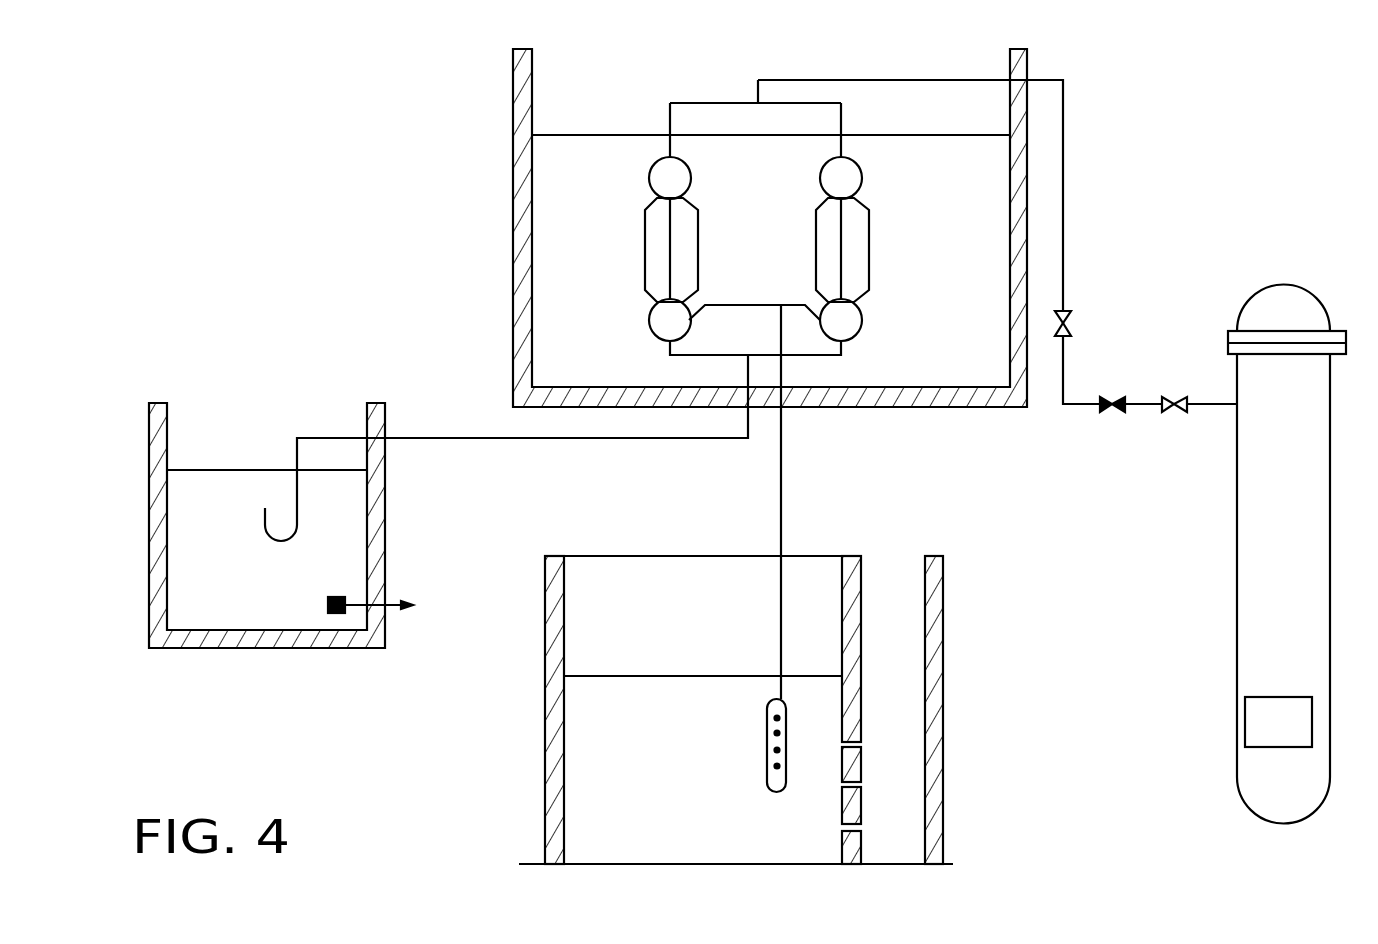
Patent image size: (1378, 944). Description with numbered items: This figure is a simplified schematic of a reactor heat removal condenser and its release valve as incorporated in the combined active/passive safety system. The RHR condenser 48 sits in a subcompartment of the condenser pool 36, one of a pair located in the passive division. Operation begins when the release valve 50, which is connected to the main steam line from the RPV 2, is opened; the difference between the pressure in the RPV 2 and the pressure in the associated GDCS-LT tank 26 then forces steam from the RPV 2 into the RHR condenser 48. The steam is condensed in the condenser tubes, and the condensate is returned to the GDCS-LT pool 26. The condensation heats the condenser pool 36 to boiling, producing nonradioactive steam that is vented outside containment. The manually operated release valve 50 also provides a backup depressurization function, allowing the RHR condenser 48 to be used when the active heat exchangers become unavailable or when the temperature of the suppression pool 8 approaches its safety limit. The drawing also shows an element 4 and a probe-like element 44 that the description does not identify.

The RPV 2 is at (1225, 505).
The heater 4 is at (1233, 718).
The suppression pool 8 is at (534, 740).
The GDCS-LT tank 26 is at (138, 548).
The condenser pool 36 is at (1034, 268).
The probe 44 is at (782, 493).
The RHR condenser 48 is at (879, 239).
The release valve 50 is at (1107, 423).